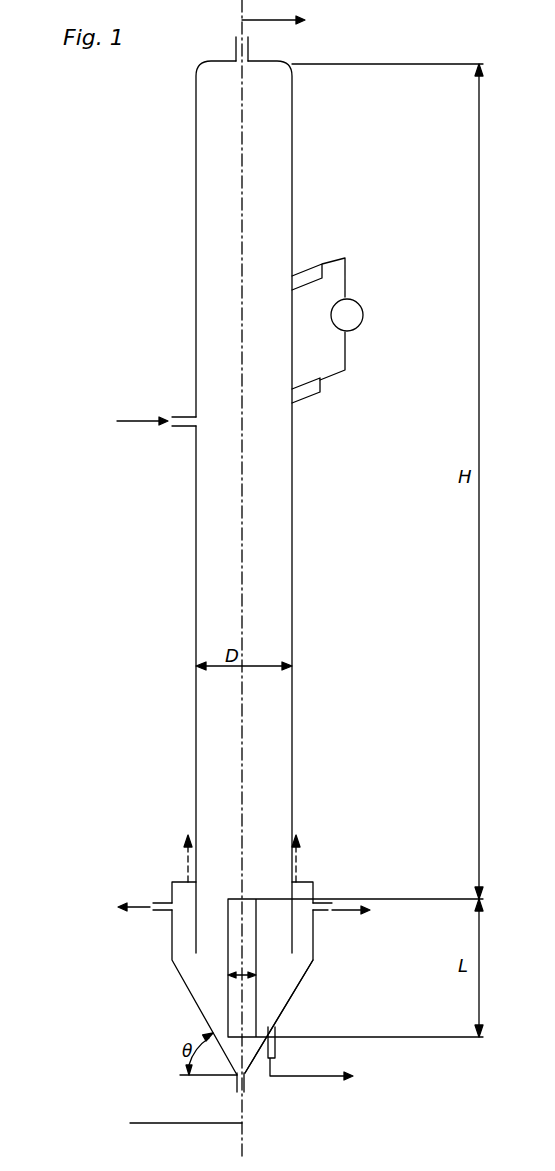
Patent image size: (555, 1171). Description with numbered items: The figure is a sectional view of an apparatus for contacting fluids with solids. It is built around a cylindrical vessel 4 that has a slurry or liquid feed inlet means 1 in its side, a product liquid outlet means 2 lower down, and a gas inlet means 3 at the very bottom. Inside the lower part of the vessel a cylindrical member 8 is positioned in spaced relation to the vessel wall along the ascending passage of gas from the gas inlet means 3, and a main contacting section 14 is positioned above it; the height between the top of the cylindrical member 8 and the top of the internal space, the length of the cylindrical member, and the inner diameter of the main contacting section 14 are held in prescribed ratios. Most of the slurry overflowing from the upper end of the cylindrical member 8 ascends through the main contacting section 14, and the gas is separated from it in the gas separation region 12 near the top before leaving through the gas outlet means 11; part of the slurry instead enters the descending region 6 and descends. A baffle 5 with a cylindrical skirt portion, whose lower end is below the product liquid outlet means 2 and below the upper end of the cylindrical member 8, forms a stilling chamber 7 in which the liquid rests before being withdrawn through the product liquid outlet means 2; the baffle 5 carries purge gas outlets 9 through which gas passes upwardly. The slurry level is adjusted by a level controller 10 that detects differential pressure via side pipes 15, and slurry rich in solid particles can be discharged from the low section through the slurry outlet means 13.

The slurry or liquid feed inlet means 1 is at (187, 426).
The product liquid outlet means 2 is at (165, 908).
The gas inlet means 3 is at (235, 1085).
The cylindrical vessel 4 is at (196, 630).
The baffle with cylindrical skirt portion 5 is at (290, 940).
The descending region 6 is at (210, 912).
The stilling chamber 7 is at (183, 932).
The cylindrical member 8 is at (228, 995).
The purge gas outlet 9 is at (188, 852).
The level controller 10 is at (363, 315).
The gas outlet means 11 is at (248, 53).
The gas separation region 12 is at (238, 341).
The slurry outlet means 13 is at (275, 1052).
The main contacting section 14 is at (255, 600).
The side pipe 15 is at (310, 392).